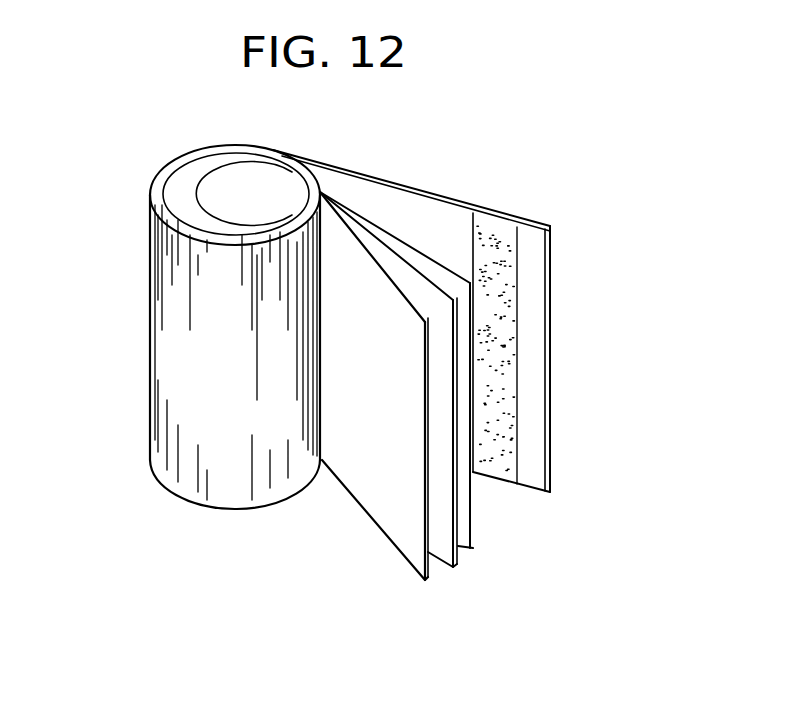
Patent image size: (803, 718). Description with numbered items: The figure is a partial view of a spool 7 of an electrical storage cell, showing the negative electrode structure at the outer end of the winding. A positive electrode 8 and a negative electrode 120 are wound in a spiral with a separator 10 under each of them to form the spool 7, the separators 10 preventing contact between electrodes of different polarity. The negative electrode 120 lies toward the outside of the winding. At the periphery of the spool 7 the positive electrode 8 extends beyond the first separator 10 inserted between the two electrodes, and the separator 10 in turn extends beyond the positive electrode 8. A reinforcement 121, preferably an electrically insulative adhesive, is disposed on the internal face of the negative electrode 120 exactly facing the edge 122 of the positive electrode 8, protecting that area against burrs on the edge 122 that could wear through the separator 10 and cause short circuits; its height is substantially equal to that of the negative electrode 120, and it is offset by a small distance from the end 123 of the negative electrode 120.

The spool 7 is at (183, 140).
The separator 10 is at (433, 272).
The positive electrode 8 is at (443, 540).
The negative electrode 120 is at (457, 233).
The reinforcement 121 is at (497, 455).
The edge of the positive electrode 122 is at (457, 557).
The end of the negative electrode 123 is at (548, 362).